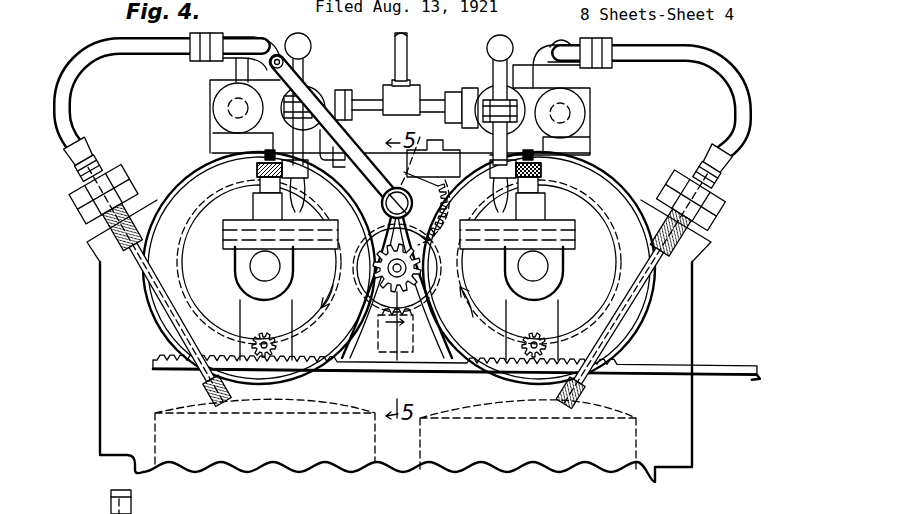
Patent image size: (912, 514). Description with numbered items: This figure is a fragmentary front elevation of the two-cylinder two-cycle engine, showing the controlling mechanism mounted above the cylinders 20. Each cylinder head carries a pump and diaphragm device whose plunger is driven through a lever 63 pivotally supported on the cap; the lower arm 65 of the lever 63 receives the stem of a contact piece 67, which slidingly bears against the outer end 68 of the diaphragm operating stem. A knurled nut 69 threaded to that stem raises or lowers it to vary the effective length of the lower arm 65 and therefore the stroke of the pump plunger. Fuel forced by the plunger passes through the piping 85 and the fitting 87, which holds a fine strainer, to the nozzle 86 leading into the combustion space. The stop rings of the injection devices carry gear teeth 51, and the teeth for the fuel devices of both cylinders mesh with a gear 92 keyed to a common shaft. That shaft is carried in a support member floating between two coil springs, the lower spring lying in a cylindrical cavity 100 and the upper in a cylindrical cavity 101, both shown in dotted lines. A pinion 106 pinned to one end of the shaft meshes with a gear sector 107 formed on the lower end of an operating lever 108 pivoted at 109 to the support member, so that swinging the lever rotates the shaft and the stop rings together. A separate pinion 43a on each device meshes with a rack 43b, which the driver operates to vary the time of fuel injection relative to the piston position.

The cylinders 20 is at (320, 468).
The pinion 43a is at (270, 328).
The rack 43b is at (743, 356).
The gear teeth 51 is at (195, 190).
The lever 63 is at (496, 77).
The lower arm 65 is at (293, 219).
The contact piece 67 is at (262, 268).
The outer end of operating stem 68 is at (247, 288).
The knurled nut 69 is at (543, 176).
The piping 85 is at (91, 48).
The nozzle 86 is at (226, 402).
The fitting 87 is at (124, 265).
The gear 92 is at (390, 280).
The cylindrical cavity 100 is at (396, 370).
The cylindrical cavity 101 is at (390, 151).
The pinion 106 is at (420, 266).
The gear sector 107 is at (430, 207).
The operating lever 108 is at (312, 100).
The pivot 109 is at (406, 87).